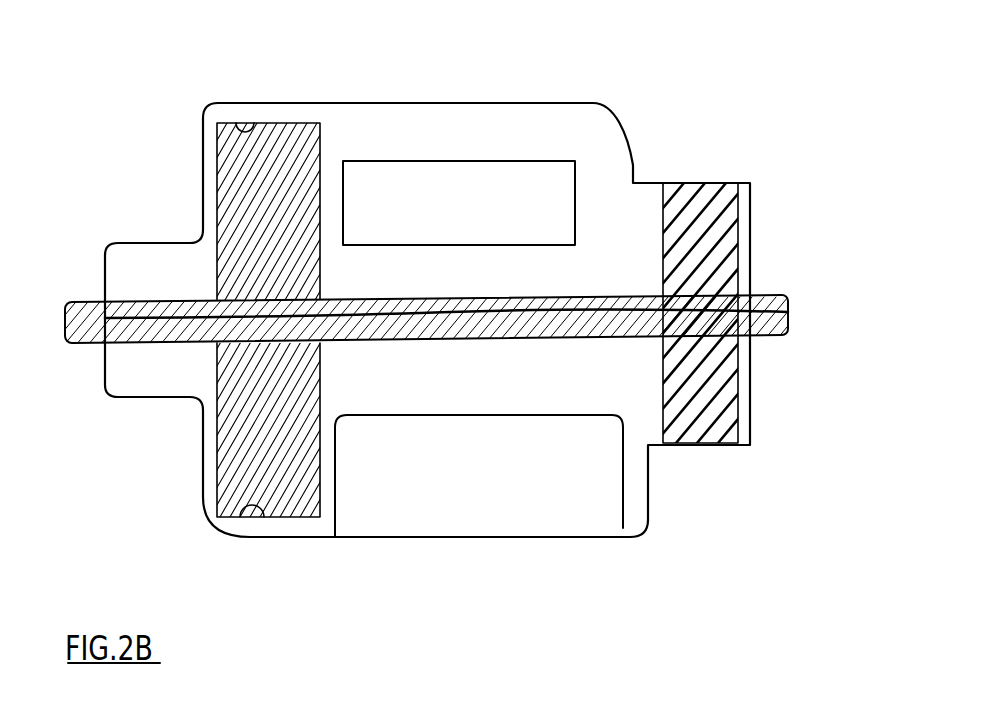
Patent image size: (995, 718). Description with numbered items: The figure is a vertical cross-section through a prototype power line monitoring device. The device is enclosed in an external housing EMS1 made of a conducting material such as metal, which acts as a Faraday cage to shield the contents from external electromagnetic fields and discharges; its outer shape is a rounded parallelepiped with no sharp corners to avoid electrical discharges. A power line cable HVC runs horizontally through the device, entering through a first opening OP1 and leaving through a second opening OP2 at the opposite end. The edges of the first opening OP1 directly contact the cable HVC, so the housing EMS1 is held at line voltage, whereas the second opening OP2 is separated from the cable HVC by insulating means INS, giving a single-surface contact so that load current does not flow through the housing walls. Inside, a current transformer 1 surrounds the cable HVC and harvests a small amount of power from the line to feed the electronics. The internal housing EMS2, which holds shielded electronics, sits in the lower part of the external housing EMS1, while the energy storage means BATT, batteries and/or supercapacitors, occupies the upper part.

The current transformer 1 is at (270, 242).
The energy storage means BATT is at (507, 170).
The power line cable HVC is at (773, 294).
The first opening OP1 is at (98, 343).
The second opening OP2 is at (751, 336).
The insulating means INS is at (716, 250).
The external housing EMS1 is at (644, 528).
The internal housing EMS2 is at (622, 472).